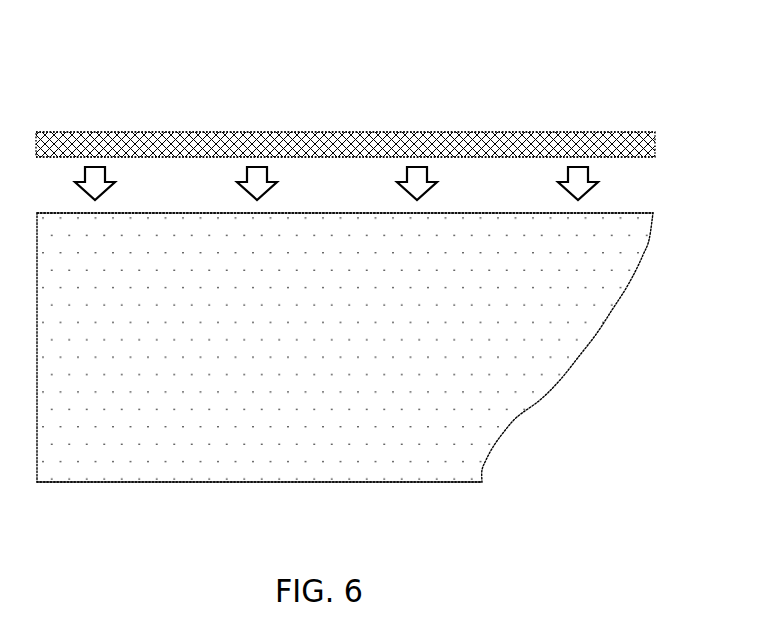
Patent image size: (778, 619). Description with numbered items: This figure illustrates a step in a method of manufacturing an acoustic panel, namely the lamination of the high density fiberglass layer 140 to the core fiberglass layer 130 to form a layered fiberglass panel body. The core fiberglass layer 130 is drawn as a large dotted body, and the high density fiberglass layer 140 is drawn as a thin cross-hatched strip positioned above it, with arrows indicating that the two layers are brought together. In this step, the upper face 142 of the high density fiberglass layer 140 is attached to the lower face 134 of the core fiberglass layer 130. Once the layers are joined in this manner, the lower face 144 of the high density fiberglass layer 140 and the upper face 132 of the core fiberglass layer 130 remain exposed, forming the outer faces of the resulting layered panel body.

The core fiberglass layer 130 is at (222, 427).
The upper face 132 is at (363, 482).
The lower face 134 is at (160, 212).
The high density fiberglass layer 140 is at (395, 140).
The upper face 142 is at (528, 166).
The lower face 144 is at (308, 130).